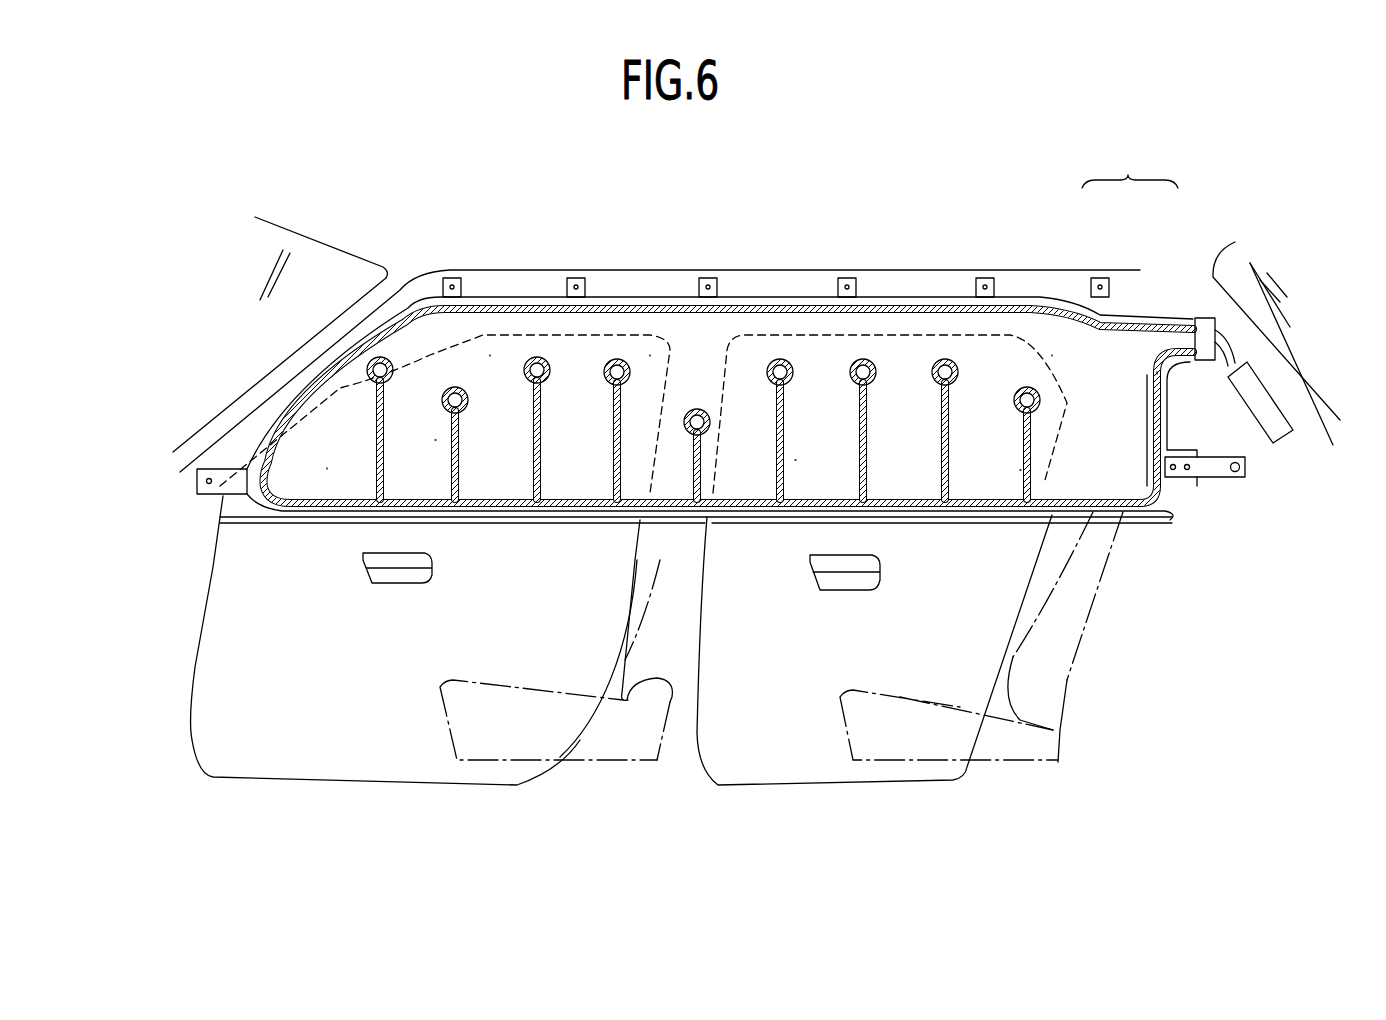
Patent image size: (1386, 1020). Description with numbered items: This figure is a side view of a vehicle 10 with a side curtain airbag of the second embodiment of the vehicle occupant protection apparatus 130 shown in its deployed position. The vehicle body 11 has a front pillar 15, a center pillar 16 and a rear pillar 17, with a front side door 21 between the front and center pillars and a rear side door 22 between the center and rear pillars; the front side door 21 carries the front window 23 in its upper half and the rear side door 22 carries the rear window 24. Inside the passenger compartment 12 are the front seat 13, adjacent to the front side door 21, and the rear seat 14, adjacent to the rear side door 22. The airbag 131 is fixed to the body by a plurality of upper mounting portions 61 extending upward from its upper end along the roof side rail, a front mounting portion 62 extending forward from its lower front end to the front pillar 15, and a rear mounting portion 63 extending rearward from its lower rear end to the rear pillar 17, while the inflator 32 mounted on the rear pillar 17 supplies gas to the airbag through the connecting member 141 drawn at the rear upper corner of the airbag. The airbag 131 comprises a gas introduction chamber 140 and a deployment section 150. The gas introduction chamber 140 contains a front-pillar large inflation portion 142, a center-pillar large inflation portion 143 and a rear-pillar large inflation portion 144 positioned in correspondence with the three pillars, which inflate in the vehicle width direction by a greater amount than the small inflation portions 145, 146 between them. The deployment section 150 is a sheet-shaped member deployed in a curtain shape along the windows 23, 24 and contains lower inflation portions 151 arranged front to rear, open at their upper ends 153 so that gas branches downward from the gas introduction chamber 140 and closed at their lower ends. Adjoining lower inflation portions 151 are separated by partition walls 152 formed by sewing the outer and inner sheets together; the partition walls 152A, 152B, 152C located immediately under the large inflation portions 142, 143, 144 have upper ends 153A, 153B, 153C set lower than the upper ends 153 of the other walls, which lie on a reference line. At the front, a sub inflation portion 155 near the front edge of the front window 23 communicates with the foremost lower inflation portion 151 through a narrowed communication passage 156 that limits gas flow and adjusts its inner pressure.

The vehicle 10 is at (190, 170).
The vehicle body 11 is at (173, 443).
The passenger compartment 12 is at (303, 866).
The front seat 13 is at (598, 765).
The rear seat 14 is at (930, 763).
The front pillar 15 is at (222, 423).
The center pillar 16 is at (632, 593).
The rear pillar 17 is at (1300, 473).
The front side door 21 is at (420, 765).
The rear side door 22 is at (800, 765).
The front window 23 is at (428, 360).
The rear window 24 is at (770, 335).
The inflator 32 is at (1263, 393).
The upper mounting portions 61 is at (985, 278).
The front mounting portion 62 is at (218, 494).
The rear mounting portion 63 is at (1215, 478).
The vehicle occupant protection apparatus 130 is at (1238, 313).
The airbag 131 is at (1130, 168).
The gas introduction chamber 140 is at (1163, 328).
The connector 141 is at (1205, 318).
The front-pillar large inflation portion 142 is at (490, 355).
The center-pillar large inflation portion 143 is at (650, 355).
The rear-pillar large inflation portion 144 is at (1052, 355).
The small inflation portion 145 is at (575, 320).
The small inflation portion 146 is at (870, 335).
The deployment section 150 is at (1150, 387).
The lower inflation portions 151 is at (557, 453).
The partition walls 152 is at (795, 460).
The partition wall 152A is at (445, 436).
The partition wall 152B is at (700, 500).
The partition wall 152C is at (1020, 470).
The upper ends 153 is at (863, 359).
The upper end 153A is at (455, 387).
The upper end 153B is at (697, 409).
The upper end 153C is at (1027, 387).
The sub inflation portion 155 is at (327, 468).
The communication passage 156 is at (360, 373).